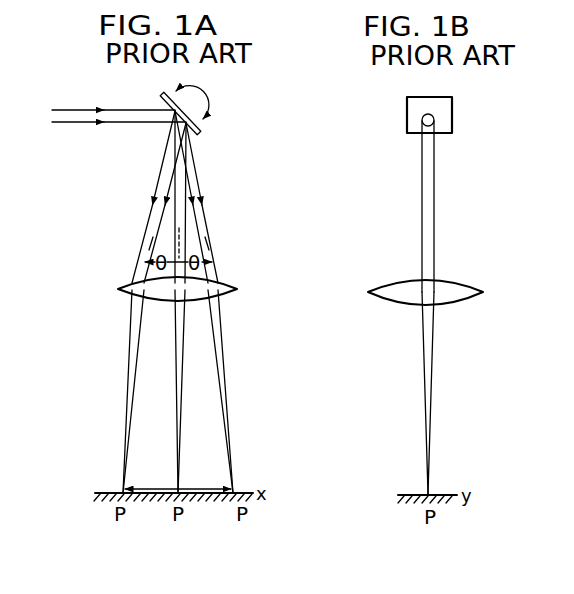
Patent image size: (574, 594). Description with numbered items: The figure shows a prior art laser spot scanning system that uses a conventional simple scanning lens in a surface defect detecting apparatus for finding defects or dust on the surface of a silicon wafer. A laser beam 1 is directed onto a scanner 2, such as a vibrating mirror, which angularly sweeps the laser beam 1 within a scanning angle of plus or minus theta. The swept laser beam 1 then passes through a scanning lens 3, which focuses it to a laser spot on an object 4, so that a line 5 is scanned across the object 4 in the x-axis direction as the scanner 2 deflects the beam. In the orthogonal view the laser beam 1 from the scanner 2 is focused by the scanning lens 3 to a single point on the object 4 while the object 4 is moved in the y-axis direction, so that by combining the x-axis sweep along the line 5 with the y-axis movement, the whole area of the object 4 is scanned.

In FIG. 1A, the laser beam 1 is at (88, 110).
In FIG. 1B, the laser beam 1 is at (435, 172).
In FIG. 1A, the scanner 2 is at (200, 134).
In FIG. 1B, the scanner 2 is at (452, 120).
In FIG. 1A, the scanning lens 3 is at (237, 288).
In FIG. 1B, the scanning lens 3 is at (480, 291).
In FIG. 1A, the object 4 is at (100, 492).
In FIG. 1A, the line 5 is at (199, 488).